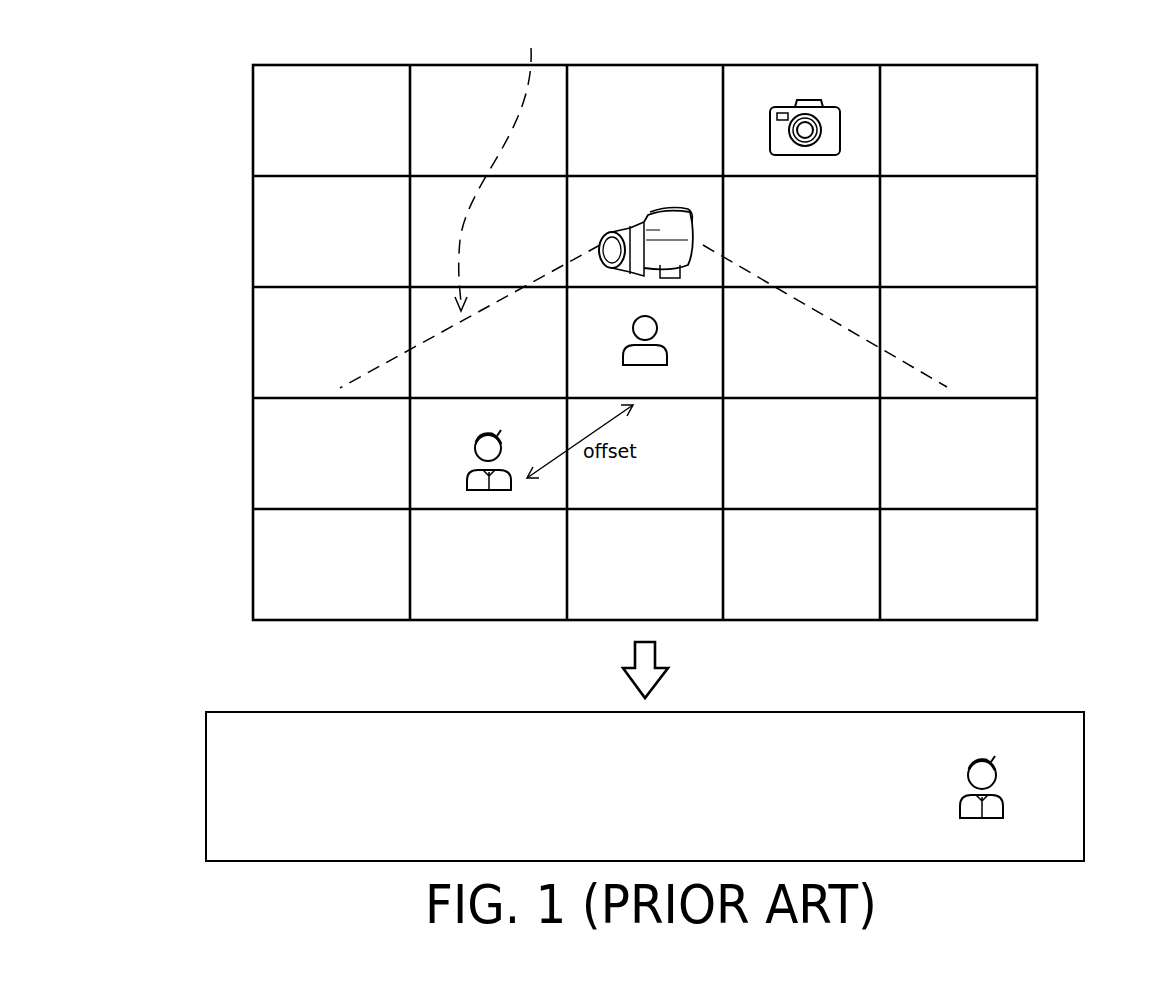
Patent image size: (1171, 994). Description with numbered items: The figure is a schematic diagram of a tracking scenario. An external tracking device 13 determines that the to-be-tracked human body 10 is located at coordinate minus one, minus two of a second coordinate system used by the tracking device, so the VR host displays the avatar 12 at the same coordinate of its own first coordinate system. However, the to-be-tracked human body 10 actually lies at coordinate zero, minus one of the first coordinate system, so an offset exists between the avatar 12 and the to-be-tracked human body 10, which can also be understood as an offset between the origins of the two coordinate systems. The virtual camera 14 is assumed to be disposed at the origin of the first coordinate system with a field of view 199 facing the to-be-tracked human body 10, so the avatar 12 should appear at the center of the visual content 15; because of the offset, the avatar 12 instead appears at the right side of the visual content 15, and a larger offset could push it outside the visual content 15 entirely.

The to-be-tracked human body 10 is at (657, 360).
The avatar 12 is at (478, 485).
The external tracking device 13 is at (826, 129).
The virtual camera 14 is at (693, 233).
The visual content 15 is at (228, 710).
The field of view 199 is at (502, 163).